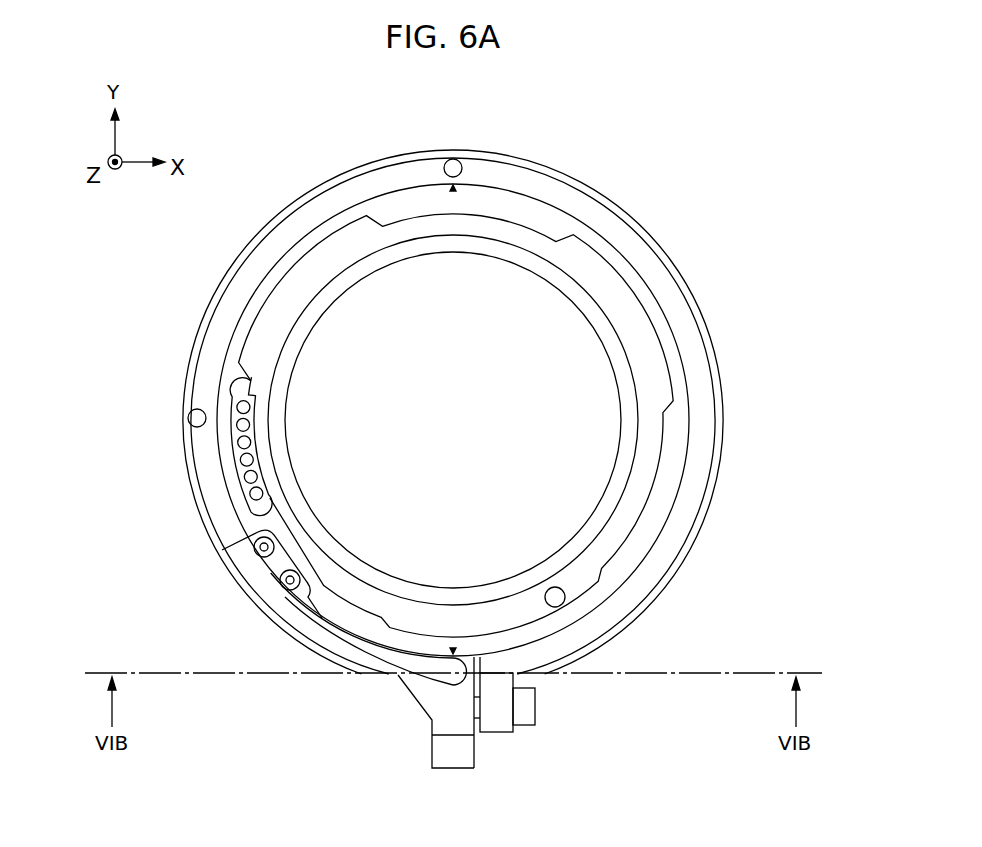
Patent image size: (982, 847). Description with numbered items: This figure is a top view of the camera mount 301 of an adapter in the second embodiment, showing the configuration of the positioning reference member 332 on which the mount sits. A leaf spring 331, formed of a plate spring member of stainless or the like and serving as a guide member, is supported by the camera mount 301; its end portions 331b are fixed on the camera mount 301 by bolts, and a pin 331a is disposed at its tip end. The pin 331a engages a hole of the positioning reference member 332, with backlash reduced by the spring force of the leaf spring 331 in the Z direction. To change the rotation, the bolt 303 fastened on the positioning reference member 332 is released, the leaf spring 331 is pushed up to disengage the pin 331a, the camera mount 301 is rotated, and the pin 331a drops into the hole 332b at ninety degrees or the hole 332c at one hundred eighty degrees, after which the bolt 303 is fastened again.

The camera mount 301 is at (238, 497).
The bolt 303 is at (530, 706).
The leaf spring 331 is at (340, 643).
The pin 331a is at (445, 675).
The end portions 331b is at (280, 585).
The positioning reference member 332 is at (708, 402).
The hole 332b is at (190, 418).
The hole 332c is at (456, 165).